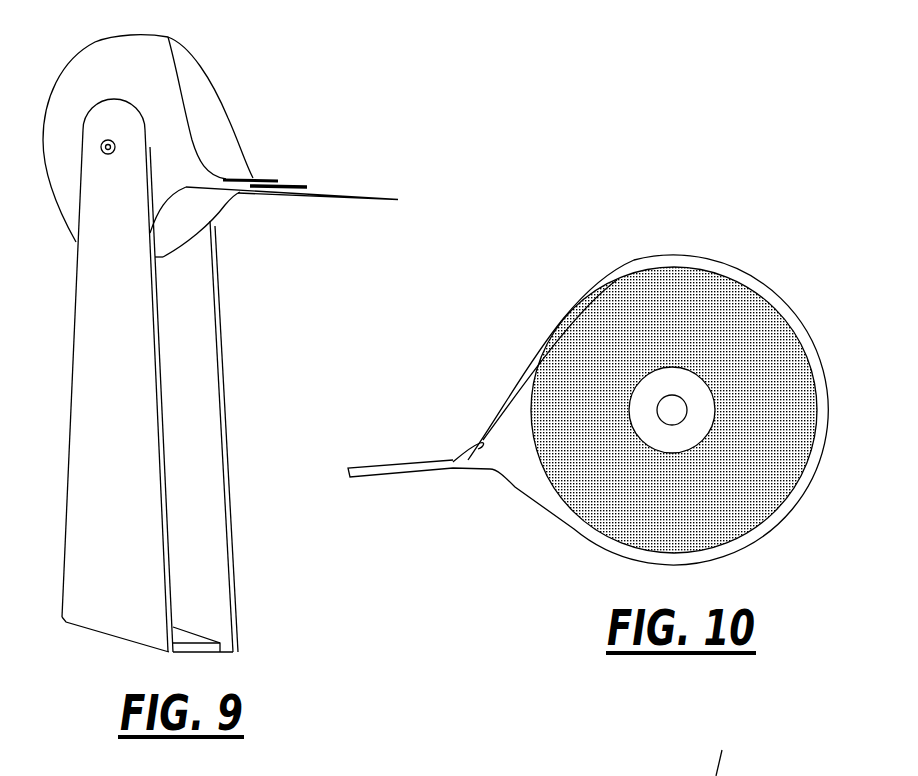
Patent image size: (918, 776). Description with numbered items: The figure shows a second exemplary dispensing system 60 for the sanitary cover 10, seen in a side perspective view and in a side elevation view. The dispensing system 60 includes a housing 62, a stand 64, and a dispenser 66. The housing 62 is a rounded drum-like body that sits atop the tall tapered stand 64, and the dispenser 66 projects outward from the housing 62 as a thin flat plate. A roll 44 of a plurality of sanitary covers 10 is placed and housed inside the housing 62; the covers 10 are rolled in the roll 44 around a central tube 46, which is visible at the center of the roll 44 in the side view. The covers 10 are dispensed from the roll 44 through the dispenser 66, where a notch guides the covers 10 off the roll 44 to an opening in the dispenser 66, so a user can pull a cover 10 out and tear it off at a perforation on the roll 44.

In FIG. 9, the sanitary cover 10 is at (376, 181).
In FIG. 10, the roll 44 is at (707, 272).
In FIG. 10, the tube 46 is at (647, 438).
In FIG. 9, the second exemplary dispensing system 60 is at (305, 88).
In FIG. 9, the housing 62 is at (217, 85).
In FIG. 10, the housing 62 is at (763, 280).
In FIG. 9, the stand 64 is at (217, 377).
In FIG. 9, the dispenser 66 is at (287, 183).
In FIG. 10, the dispenser 66 is at (384, 460).